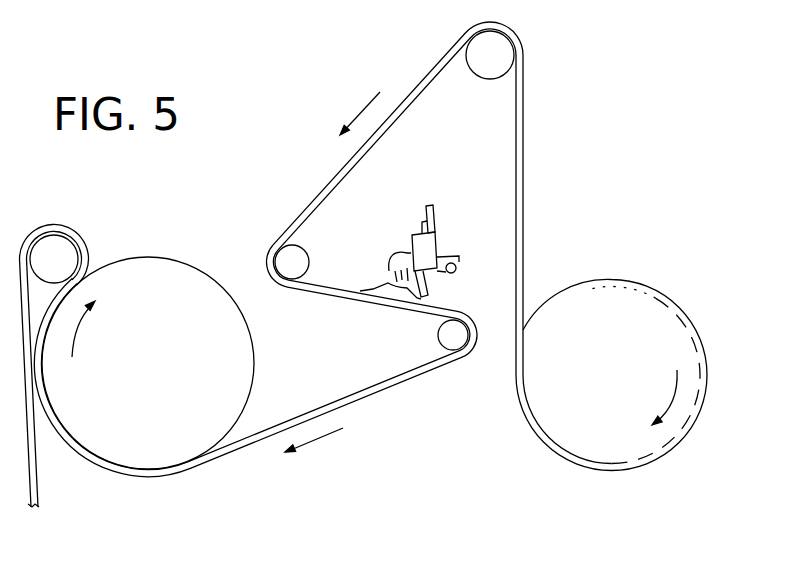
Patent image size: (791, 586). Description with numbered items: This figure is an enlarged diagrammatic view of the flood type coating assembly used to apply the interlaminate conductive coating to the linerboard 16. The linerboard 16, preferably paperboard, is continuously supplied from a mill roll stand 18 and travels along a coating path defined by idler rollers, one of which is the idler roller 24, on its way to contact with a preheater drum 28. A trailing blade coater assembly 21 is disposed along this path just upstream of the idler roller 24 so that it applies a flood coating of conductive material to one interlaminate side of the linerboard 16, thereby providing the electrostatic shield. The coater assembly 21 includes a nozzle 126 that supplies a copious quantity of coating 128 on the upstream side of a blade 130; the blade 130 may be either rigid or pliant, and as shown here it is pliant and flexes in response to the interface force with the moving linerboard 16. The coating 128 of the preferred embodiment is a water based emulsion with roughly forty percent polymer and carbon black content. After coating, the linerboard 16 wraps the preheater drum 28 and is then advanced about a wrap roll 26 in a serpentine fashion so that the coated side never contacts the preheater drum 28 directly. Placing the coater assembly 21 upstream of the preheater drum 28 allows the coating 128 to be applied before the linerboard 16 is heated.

The linerboard 16 is at (522, 192).
The mill roll stand 18 is at (616, 385).
The trailing blade coater assembly 21 is at (449, 213).
The idler roller 24 is at (451, 334).
The wrap roll 26 is at (65, 273).
The preheater drum 28 is at (160, 376).
The nozzle 126 is at (402, 254).
The coating 128 is at (385, 280).
The blade 130 is at (423, 294).